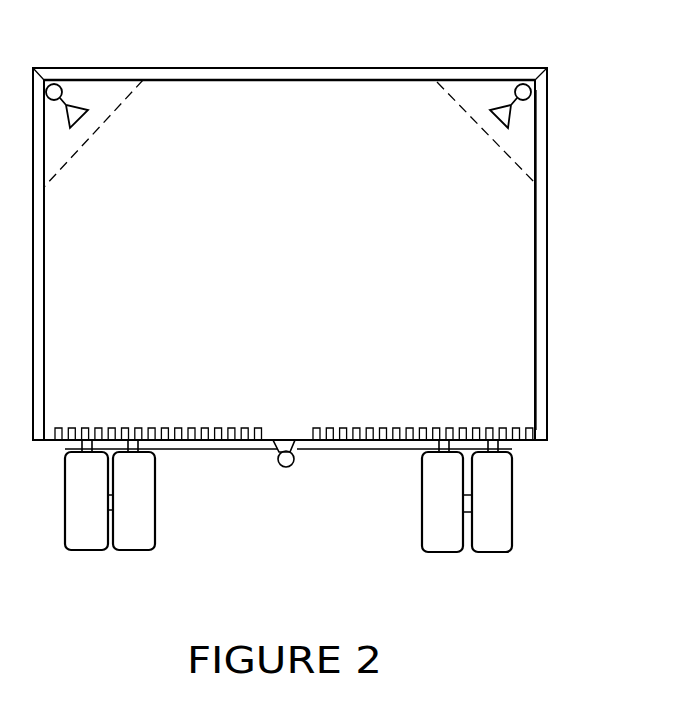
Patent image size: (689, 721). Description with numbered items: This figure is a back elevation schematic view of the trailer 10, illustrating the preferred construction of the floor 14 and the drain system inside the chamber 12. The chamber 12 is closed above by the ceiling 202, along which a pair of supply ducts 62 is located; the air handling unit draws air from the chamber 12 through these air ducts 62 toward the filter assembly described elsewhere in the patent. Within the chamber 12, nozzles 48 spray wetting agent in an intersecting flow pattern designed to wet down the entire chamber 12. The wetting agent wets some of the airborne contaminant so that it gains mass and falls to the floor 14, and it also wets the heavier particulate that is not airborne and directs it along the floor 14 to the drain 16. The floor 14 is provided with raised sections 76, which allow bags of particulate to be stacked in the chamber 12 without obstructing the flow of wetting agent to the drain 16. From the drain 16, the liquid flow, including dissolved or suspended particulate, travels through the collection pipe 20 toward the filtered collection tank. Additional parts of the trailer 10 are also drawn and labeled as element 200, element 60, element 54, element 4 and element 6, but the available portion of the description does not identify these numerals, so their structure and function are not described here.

The trailer 10 is at (222, 63).
The chamber 12 is at (313, 122).
The ceiling 202 is at (266, 82).
The side rail 200 is at (530, 230).
The supply ducts 62 is at (110, 87).
The diagonal support 60 is at (97, 133).
The pivot 54 is at (55, 83).
The nozzles 48 is at (78, 105).
The raised sections 76 is at (178, 440).
The floor 14 is at (510, 437).
The drain 16 is at (293, 440).
The collection pipe 20 is at (295, 456).
The axle 4 is at (96, 449).
The wheel 6 is at (80, 525).